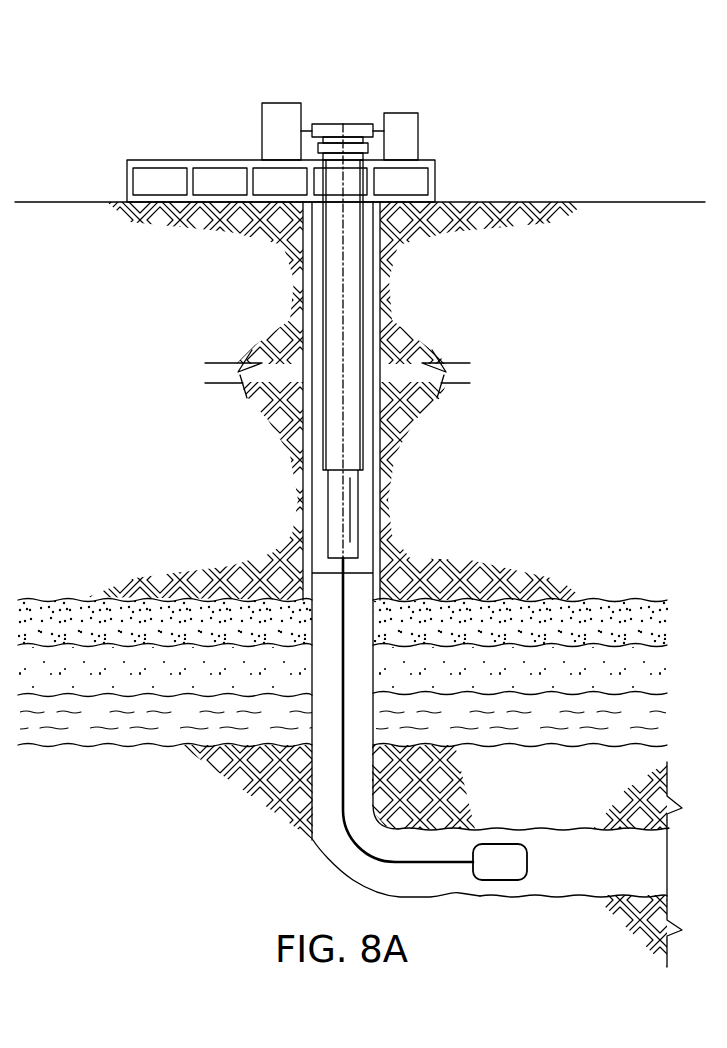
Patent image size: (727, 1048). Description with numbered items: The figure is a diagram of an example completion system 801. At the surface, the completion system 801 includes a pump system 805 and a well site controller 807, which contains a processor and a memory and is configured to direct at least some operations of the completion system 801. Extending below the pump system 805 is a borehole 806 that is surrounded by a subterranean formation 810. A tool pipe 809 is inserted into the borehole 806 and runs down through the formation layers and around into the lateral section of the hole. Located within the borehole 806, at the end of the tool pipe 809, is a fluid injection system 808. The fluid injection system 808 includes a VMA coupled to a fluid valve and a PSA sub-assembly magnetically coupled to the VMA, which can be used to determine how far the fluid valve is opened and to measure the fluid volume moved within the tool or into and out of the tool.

The completion system 801 is at (124, 74).
The pump system 805 is at (404, 122).
The borehole 806 is at (303, 497).
The well site controller 807 is at (283, 113).
The fluid injection system 808 is at (499, 880).
The tool pipe 809 is at (345, 592).
The subterranean formation 810 is at (455, 792).